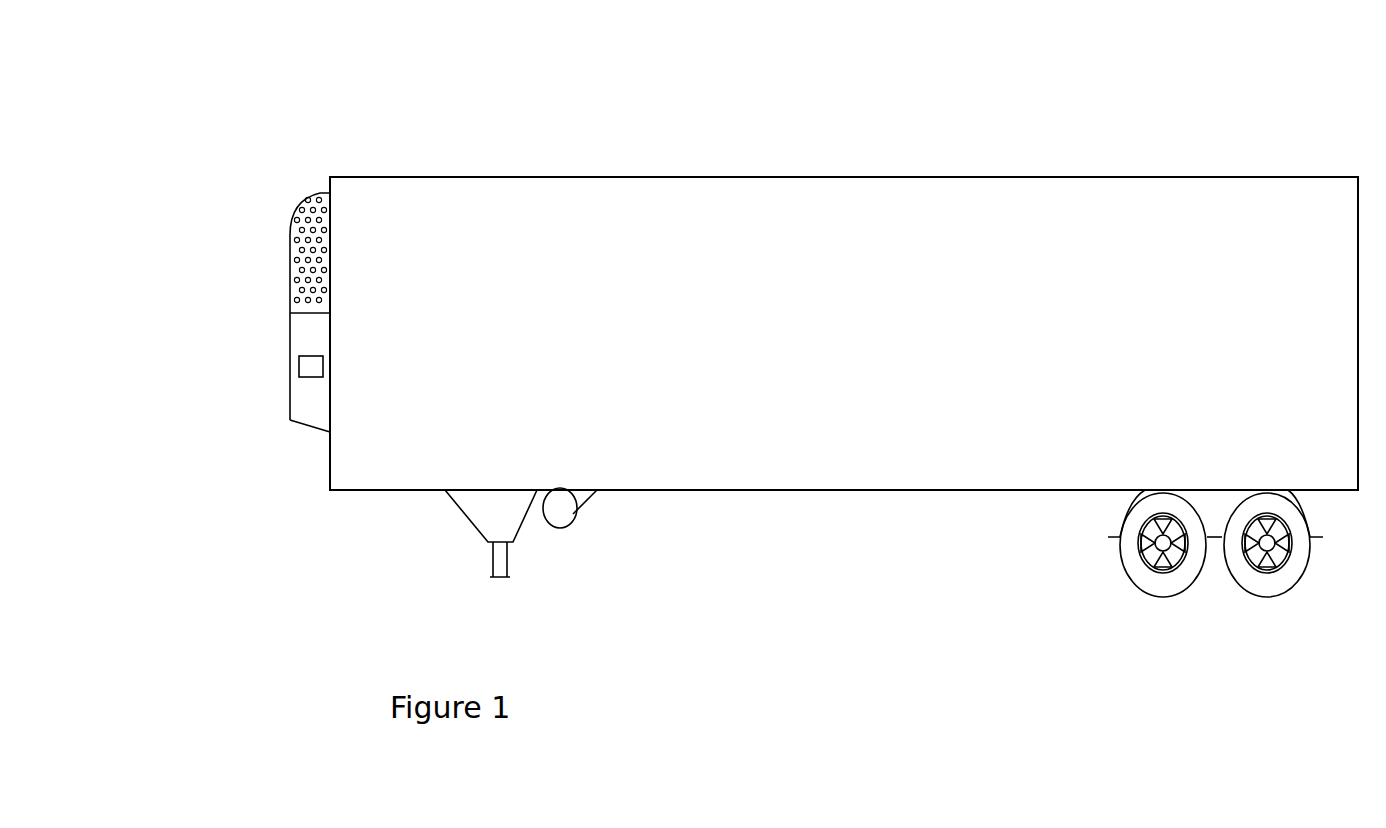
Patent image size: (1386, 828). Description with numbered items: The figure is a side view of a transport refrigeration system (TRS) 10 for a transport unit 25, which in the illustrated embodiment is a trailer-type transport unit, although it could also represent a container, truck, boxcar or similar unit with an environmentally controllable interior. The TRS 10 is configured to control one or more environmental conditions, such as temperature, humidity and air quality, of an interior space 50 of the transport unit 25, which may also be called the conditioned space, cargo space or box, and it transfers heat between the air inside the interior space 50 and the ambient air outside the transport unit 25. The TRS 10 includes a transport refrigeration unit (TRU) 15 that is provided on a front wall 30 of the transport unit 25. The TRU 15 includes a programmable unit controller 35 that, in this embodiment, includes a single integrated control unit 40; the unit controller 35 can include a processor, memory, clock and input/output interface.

The transport refrigeration system 10 is at (587, 82).
The transport refrigeration unit 15 is at (305, 200).
The transport unit 25 is at (844, 176).
The front wall 30 is at (329, 478).
The programmable unit controller 35 is at (251, 384).
The single integrated control unit 40 is at (325, 366).
The interior space 50 is at (830, 468).